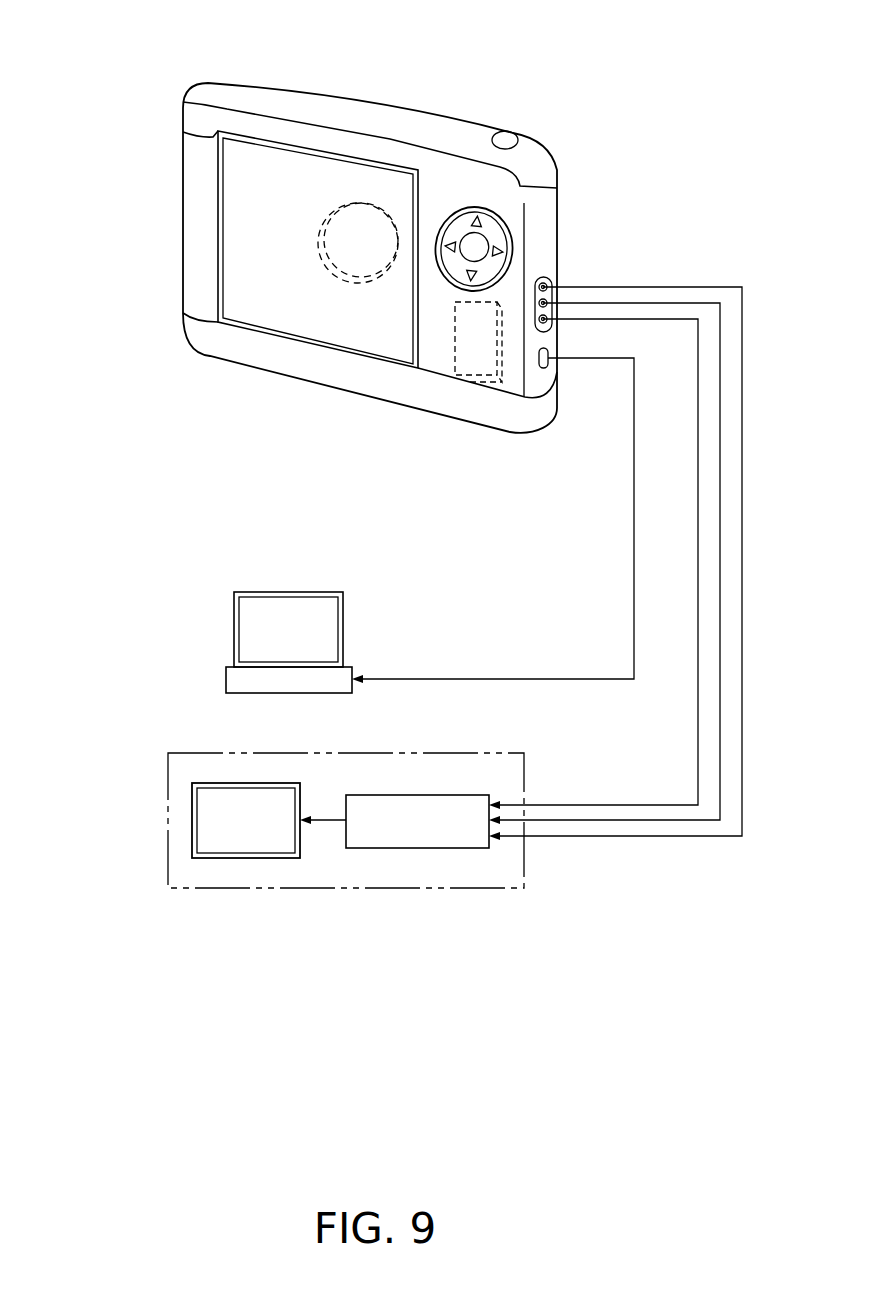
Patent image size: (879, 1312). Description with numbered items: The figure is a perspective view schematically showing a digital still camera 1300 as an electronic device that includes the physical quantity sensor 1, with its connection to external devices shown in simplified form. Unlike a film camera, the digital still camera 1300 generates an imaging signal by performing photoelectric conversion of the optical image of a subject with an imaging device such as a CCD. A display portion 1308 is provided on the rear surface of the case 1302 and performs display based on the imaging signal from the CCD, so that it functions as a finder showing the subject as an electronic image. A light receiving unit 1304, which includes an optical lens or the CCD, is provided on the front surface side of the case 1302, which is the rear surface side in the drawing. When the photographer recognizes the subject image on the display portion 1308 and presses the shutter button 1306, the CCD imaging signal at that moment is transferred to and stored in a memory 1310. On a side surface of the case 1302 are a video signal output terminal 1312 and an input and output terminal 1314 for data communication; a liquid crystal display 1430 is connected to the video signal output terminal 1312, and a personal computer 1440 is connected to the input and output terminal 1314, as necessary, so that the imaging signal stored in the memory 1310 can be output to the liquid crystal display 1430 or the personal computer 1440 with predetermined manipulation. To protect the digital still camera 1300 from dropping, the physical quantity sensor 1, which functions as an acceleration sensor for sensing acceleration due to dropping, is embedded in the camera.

The digital still camera 1300 is at (472, 72).
The case 1302 is at (198, 118).
The light receiving unit 1304 is at (362, 202).
The shutter button 1306 is at (505, 132).
The display portion 1308 is at (300, 317).
The memory 1310 is at (485, 370).
The video signal output terminal 1312 is at (541, 282).
The input and output terminal for data communication 1314 is at (550, 364).
The physical quantity sensor 1 is at (443, 356).
The liquid crystal display 1430 is at (168, 820).
The personal computer 1440 is at (234, 632).